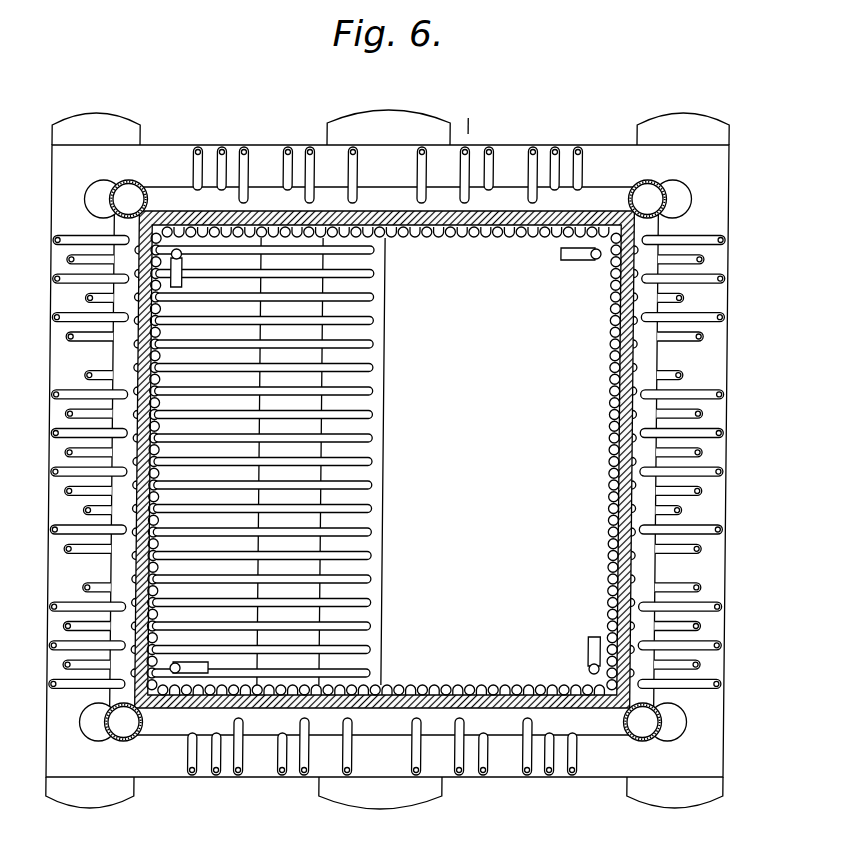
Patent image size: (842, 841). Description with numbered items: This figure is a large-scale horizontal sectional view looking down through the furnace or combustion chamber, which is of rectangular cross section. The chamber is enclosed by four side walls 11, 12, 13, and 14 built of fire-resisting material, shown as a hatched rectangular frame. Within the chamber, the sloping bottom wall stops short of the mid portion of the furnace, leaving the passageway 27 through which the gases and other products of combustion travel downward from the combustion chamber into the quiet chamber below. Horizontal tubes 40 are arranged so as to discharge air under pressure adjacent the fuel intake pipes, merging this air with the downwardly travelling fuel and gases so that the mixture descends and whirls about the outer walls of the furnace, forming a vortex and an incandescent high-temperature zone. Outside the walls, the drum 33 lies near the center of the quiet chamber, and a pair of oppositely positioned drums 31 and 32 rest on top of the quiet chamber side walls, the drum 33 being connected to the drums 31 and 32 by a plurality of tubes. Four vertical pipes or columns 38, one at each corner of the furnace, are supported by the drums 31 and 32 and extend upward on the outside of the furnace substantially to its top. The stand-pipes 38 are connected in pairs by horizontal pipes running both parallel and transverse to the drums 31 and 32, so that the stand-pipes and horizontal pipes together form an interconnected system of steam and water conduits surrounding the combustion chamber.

The side wall 11 is at (147, 357).
The side wall 12 is at (510, 700).
The side wall 13 is at (635, 498).
The side wall 14 is at (496, 218).
The passageway 27 is at (292, 662).
The drum 31 is at (107, 122).
The drum 32 is at (678, 124).
The drum 33 is at (403, 123).
The vertical pipes or columns 38 is at (102, 187).
The horizontal tubes 40 is at (184, 257).